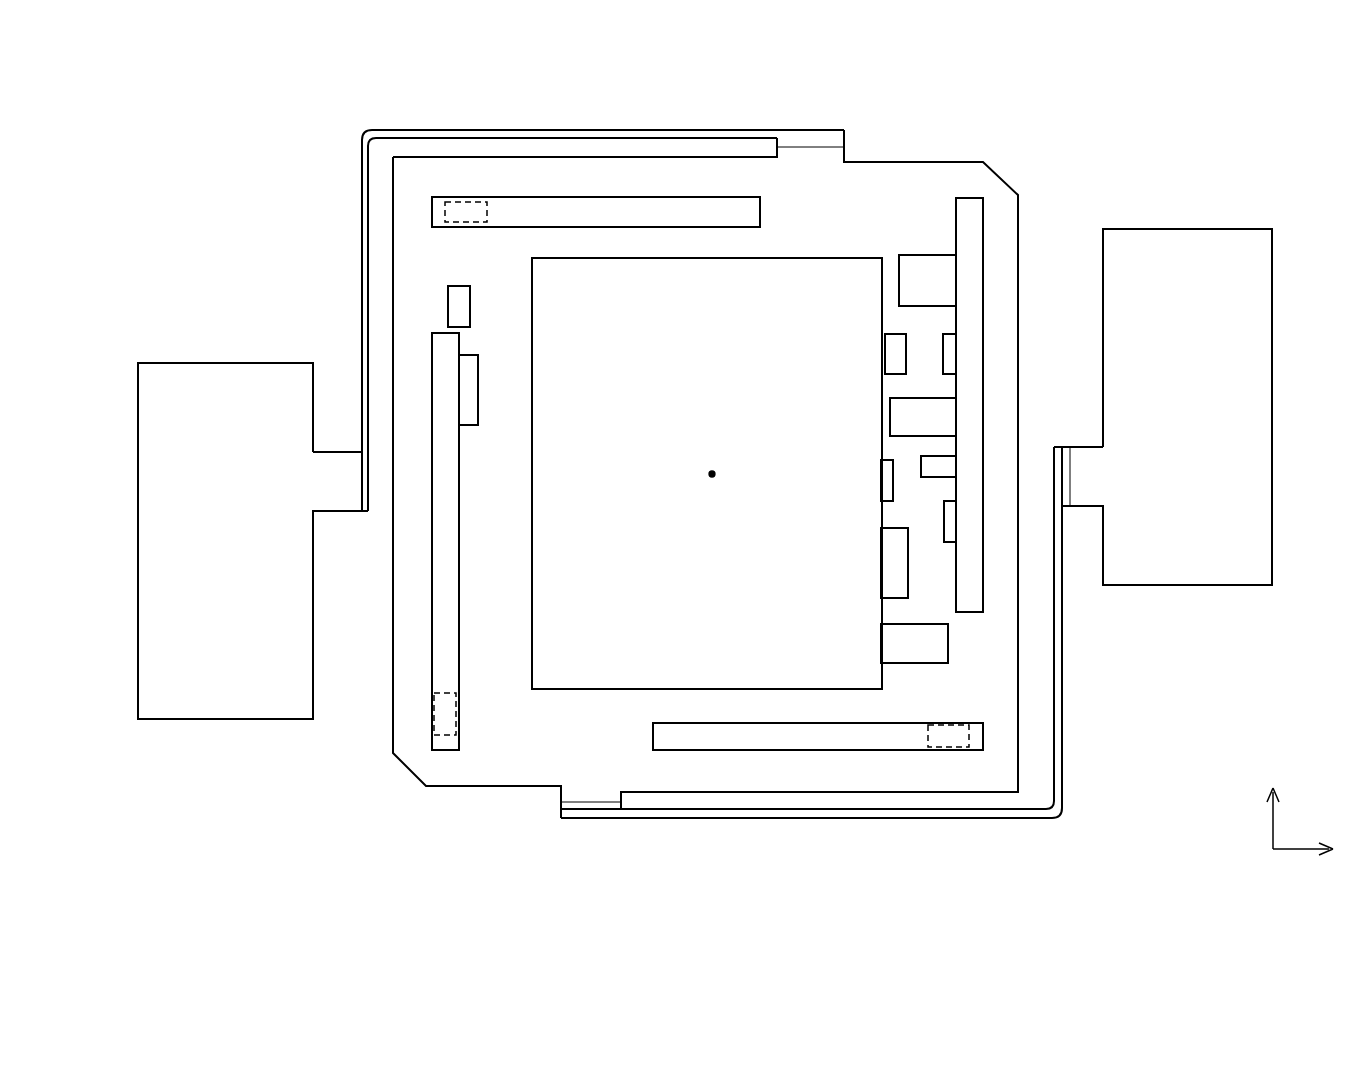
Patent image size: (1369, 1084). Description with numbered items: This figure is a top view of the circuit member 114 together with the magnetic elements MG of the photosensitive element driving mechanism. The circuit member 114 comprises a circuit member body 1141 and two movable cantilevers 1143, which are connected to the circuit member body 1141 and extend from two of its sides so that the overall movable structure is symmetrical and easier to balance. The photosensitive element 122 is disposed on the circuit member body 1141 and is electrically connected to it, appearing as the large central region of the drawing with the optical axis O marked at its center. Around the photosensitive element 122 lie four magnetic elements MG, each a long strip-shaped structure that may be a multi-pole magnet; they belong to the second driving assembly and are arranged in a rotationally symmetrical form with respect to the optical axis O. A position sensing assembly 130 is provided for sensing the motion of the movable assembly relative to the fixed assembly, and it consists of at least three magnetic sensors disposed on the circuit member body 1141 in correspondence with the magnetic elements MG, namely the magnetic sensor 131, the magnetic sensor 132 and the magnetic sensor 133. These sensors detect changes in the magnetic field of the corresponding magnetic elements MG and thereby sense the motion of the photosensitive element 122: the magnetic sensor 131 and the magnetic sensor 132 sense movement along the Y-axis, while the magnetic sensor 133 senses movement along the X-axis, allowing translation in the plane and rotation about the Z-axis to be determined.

The circuit member 114 is at (243, 100).
The circuit member body 1141 is at (963, 173).
The movable cantilever 1143 is at (362, 290).
The photosensitive element 122 is at (843, 282).
The position sensing assembly 130 is at (98, 192).
The magnetic sensor 131 is at (465, 208).
The magnetic sensor 132 is at (945, 736).
The magnetic sensor 133 is at (445, 715).
The magnetic element MG is at (683, 210).
The optical axis O is at (725, 459).